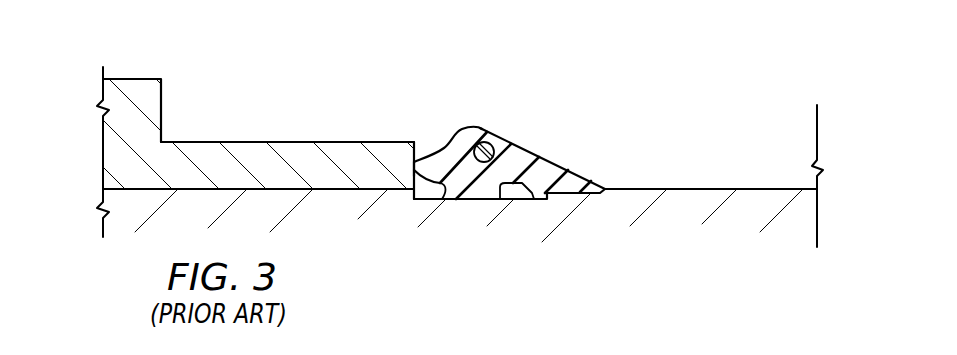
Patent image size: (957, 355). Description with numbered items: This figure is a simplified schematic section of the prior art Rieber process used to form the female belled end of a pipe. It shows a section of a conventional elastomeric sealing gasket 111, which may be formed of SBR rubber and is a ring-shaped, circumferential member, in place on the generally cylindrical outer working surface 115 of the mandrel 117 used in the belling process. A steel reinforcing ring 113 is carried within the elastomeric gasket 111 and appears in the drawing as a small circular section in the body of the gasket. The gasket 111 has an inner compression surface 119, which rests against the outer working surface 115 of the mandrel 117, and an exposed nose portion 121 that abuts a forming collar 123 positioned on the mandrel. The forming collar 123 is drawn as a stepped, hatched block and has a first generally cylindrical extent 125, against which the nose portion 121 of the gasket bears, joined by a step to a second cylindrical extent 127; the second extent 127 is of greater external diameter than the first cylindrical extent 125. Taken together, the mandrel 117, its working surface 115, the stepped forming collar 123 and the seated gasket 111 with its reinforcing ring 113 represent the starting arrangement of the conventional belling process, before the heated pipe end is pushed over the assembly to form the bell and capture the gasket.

The elastomeric sealing gasket 111 is at (557, 164).
The steel reinforcing ring 113 is at (497, 142).
The outer working surface 115 is at (640, 188).
The mandrel 117 is at (753, 200).
The inner compression surface 119 is at (488, 200).
The exposed nose portion 121 is at (414, 167).
The forming collar 123 is at (300, 150).
The first generally cylindrical extent 125 is at (245, 142).
The second cylindrical extent 127 is at (130, 79).